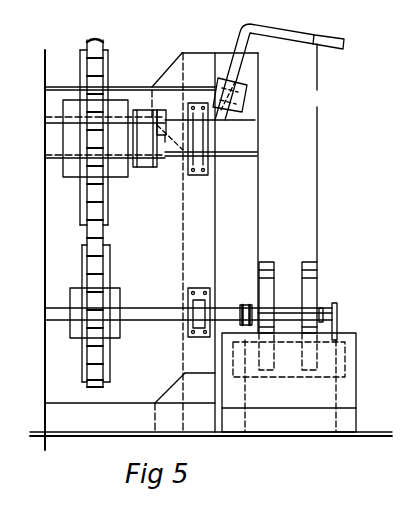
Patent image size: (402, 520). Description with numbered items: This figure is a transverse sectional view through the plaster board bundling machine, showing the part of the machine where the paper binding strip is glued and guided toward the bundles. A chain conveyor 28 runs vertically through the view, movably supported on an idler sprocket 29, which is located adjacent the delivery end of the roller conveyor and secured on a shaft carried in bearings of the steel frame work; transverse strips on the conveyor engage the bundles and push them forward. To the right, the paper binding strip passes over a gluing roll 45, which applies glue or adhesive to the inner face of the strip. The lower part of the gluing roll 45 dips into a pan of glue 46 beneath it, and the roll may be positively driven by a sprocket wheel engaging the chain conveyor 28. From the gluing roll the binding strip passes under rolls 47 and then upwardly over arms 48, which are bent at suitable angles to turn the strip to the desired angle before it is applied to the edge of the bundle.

The chain conveyor 28 is at (95, 40).
The idler sprocket 29 is at (108, 63).
The gluing roll 45 is at (320, 292).
The pan of glue 46 is at (298, 380).
The rolls 47 is at (308, 318).
The arms 48 is at (332, 48).